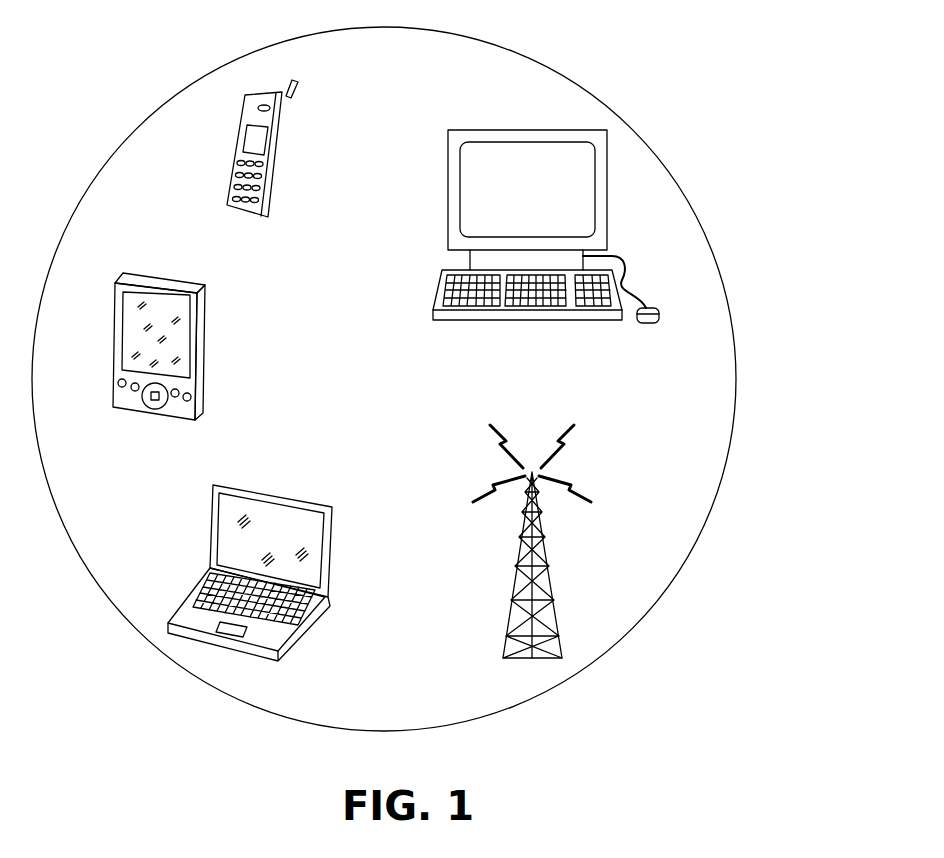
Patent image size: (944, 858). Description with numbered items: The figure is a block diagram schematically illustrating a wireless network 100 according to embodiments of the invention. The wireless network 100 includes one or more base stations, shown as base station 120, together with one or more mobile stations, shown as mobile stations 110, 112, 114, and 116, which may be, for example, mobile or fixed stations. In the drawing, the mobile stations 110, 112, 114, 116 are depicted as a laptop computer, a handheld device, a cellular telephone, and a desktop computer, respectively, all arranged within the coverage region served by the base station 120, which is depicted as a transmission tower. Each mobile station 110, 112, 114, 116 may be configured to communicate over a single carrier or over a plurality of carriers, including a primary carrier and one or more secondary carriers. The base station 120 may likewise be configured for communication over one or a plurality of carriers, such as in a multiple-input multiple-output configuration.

The wireless network 100 is at (790, 64).
The mobile station 110 is at (275, 495).
The mobile station 112 is at (210, 367).
The mobile station 114 is at (238, 137).
The mobile station 116 is at (505, 128).
The base station 120 is at (553, 592).